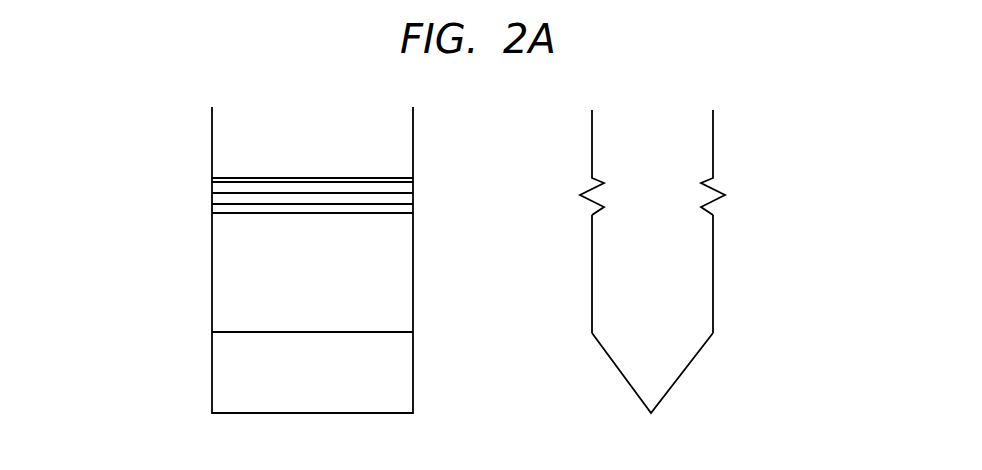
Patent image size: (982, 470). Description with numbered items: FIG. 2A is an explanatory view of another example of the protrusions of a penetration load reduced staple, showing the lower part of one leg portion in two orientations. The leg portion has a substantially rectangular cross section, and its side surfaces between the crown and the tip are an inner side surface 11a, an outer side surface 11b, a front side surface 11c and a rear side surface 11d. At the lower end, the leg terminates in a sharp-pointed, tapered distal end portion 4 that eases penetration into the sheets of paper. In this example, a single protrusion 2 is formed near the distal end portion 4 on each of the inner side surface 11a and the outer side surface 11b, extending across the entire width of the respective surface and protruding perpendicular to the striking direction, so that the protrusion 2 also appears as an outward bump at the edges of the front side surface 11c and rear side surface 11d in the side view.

The protrusion 2 is at (227, 191).
The distal end portion 4 is at (223, 397).
The inner side surface 11a is at (377, 199).
The outer side surface 11b is at (227, 292).
The front side surface 11c is at (212, 241).
The rear side surface 11d is at (413, 318).